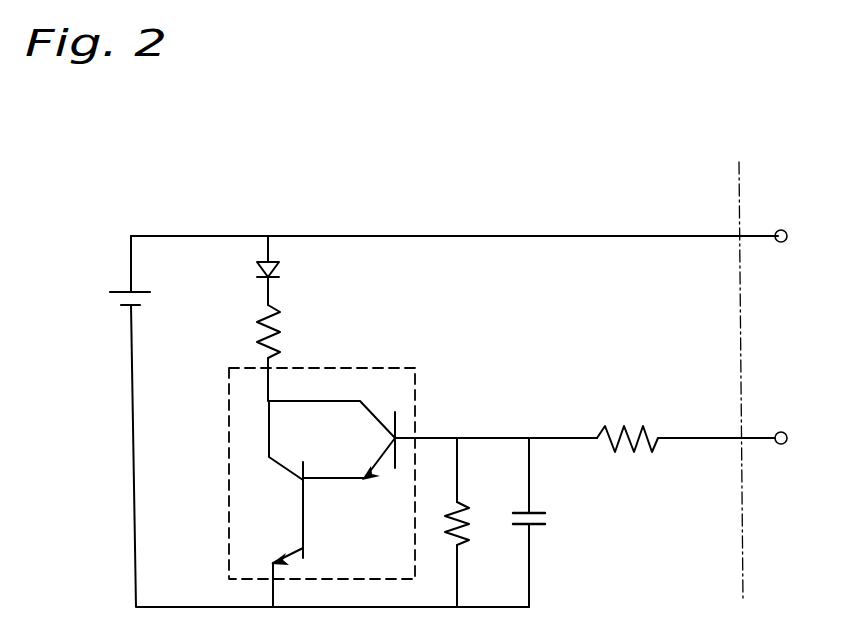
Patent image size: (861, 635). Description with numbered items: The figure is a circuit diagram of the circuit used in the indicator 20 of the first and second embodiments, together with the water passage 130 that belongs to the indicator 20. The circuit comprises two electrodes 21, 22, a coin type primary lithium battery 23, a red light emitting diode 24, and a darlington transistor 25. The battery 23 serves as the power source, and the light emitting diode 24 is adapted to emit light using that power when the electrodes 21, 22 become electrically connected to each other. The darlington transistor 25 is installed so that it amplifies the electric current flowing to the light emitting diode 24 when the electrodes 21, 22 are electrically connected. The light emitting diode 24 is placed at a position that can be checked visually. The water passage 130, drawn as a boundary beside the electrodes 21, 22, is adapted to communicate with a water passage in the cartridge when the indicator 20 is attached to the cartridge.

The indicator 20 is at (500, 178).
The electrode 21 is at (787, 231).
The electrode 22 is at (788, 444).
The coin type primary lithium battery 23 is at (118, 305).
The red light emitting diode 24 is at (253, 273).
The darlington transistor 25 is at (357, 369).
The water passage 130 is at (743, 535).